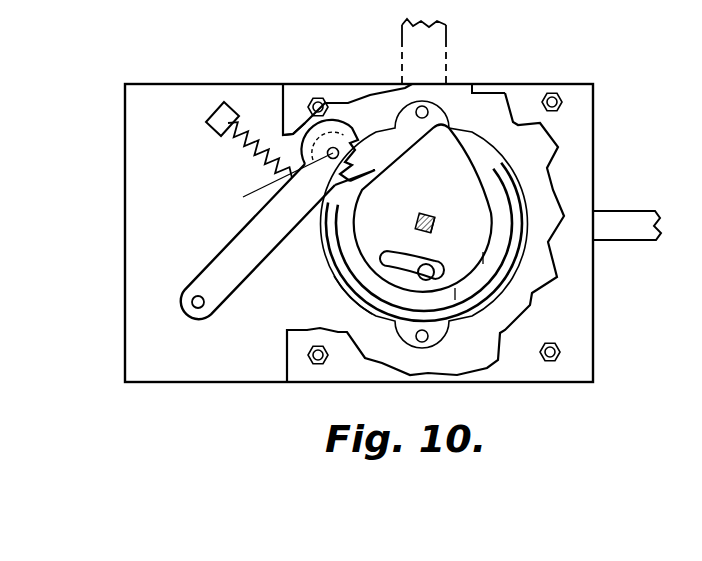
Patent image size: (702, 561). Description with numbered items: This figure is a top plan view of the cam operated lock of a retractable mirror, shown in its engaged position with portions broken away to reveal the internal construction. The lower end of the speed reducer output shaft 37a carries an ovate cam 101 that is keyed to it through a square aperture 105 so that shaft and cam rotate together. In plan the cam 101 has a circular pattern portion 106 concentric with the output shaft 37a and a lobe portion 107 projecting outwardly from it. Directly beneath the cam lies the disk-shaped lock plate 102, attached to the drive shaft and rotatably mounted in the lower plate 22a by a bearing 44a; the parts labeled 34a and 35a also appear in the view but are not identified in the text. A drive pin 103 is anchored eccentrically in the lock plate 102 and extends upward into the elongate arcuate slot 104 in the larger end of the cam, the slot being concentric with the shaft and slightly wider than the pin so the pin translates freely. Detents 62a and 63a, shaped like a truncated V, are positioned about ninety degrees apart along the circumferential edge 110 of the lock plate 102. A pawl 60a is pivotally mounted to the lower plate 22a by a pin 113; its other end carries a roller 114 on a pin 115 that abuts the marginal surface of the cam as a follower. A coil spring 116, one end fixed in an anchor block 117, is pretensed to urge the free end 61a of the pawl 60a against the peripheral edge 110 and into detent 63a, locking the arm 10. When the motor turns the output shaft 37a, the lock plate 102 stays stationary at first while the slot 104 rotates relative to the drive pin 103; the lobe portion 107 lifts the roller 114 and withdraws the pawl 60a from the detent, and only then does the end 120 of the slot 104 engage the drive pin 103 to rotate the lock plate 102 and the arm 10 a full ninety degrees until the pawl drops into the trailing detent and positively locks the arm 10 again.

The arm 10 is at (437, 38).
The lower plate 22a is at (193, 102).
The mounting plate 34a is at (585, 92).
The fastening nut 35a is at (559, 98).
The speed reducer output shaft 37a is at (443, 199).
The bearing 44a is at (392, 312).
The pawl 60a is at (242, 227).
The free end of pawl 61a is at (362, 160).
The detent 62a is at (345, 187).
The detent 63a is at (503, 170).
The ovate cam 101 is at (455, 290).
The lock plate 102 is at (505, 197).
The drive pin 103 is at (425, 272).
The arcuate slot 104 is at (440, 271).
The square aperture 105 is at (436, 222).
The circular pattern portion 106 is at (483, 258).
The lobe portion 107 is at (467, 130).
The circumferential edge 110 is at (518, 222).
The pin 113 is at (200, 296).
The roller 114 is at (303, 122).
The pin 115 is at (271, 181).
The coil spring 116 is at (230, 147).
The anchor block 117 is at (210, 119).
The end of slot 120 is at (390, 250).